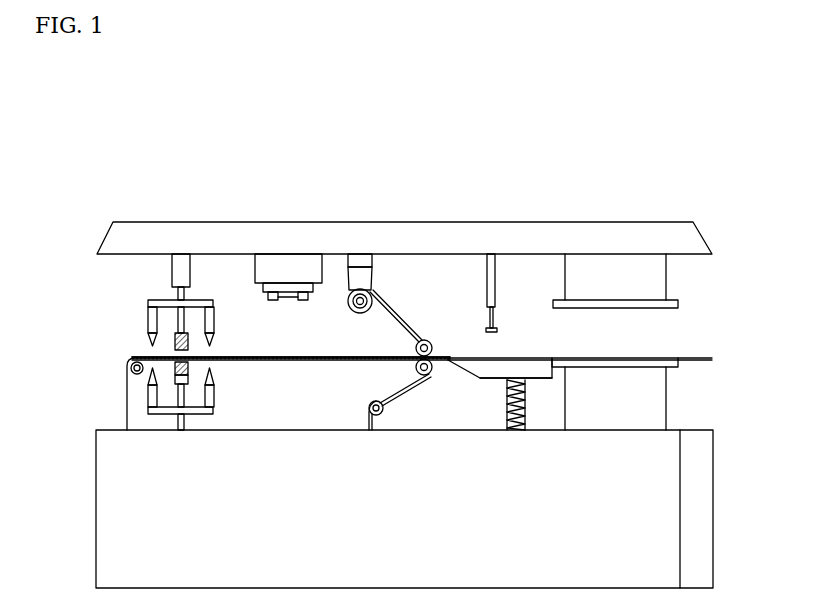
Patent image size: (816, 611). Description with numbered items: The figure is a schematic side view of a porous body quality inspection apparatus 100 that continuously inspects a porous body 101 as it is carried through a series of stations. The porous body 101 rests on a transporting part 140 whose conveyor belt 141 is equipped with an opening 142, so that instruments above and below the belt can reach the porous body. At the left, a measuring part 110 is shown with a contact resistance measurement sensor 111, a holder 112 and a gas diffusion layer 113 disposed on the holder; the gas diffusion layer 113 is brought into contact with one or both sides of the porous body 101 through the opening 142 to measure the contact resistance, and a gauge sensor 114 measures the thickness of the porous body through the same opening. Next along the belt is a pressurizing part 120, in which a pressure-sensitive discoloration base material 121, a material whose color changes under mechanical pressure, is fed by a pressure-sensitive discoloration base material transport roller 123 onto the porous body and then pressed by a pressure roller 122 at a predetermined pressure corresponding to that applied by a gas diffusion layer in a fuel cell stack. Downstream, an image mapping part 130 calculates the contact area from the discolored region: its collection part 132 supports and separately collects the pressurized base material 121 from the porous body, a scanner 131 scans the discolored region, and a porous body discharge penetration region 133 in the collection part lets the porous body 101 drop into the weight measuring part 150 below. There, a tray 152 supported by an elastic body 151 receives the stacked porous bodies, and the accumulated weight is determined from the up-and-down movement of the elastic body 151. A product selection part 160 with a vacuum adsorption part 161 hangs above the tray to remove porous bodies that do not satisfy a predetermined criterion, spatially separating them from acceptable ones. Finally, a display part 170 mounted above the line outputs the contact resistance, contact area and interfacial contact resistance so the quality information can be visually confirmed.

The porous body quality inspection apparatus 100 is at (207, 168).
The porous body 101 is at (217, 357).
The measuring part 110 is at (154, 307).
The contact resistance measurement sensor 111 is at (116, 331).
The holder 112 is at (155, 342).
The gas diffusion layer 113 is at (173, 343).
The gauge sensor 114 is at (218, 340).
The pressurizing part 120 is at (393, 263).
The pressure-sensitive discoloration base material 121 is at (388, 320).
The pressure roller 122 is at (427, 338).
The pressure-sensitive discoloration base material transport roller 123 is at (360, 313).
The image mapping part 130 is at (592, 342).
The scanner 131 is at (615, 357).
The collection part 132 is at (547, 357).
The porous body discharge penetration region 133 is at (498, 357).
The transporting part 140 is at (288, 421).
The conveyor belt 141 is at (348, 360).
The opening 142 is at (190, 362).
The weight measuring part 150 is at (519, 431).
The elastic body 151 is at (524, 413).
The tray 152 is at (540, 380).
The product selection part 160 is at (538, 260).
The vacuum adsorption part 161 is at (495, 315).
The display part 170 is at (294, 250).